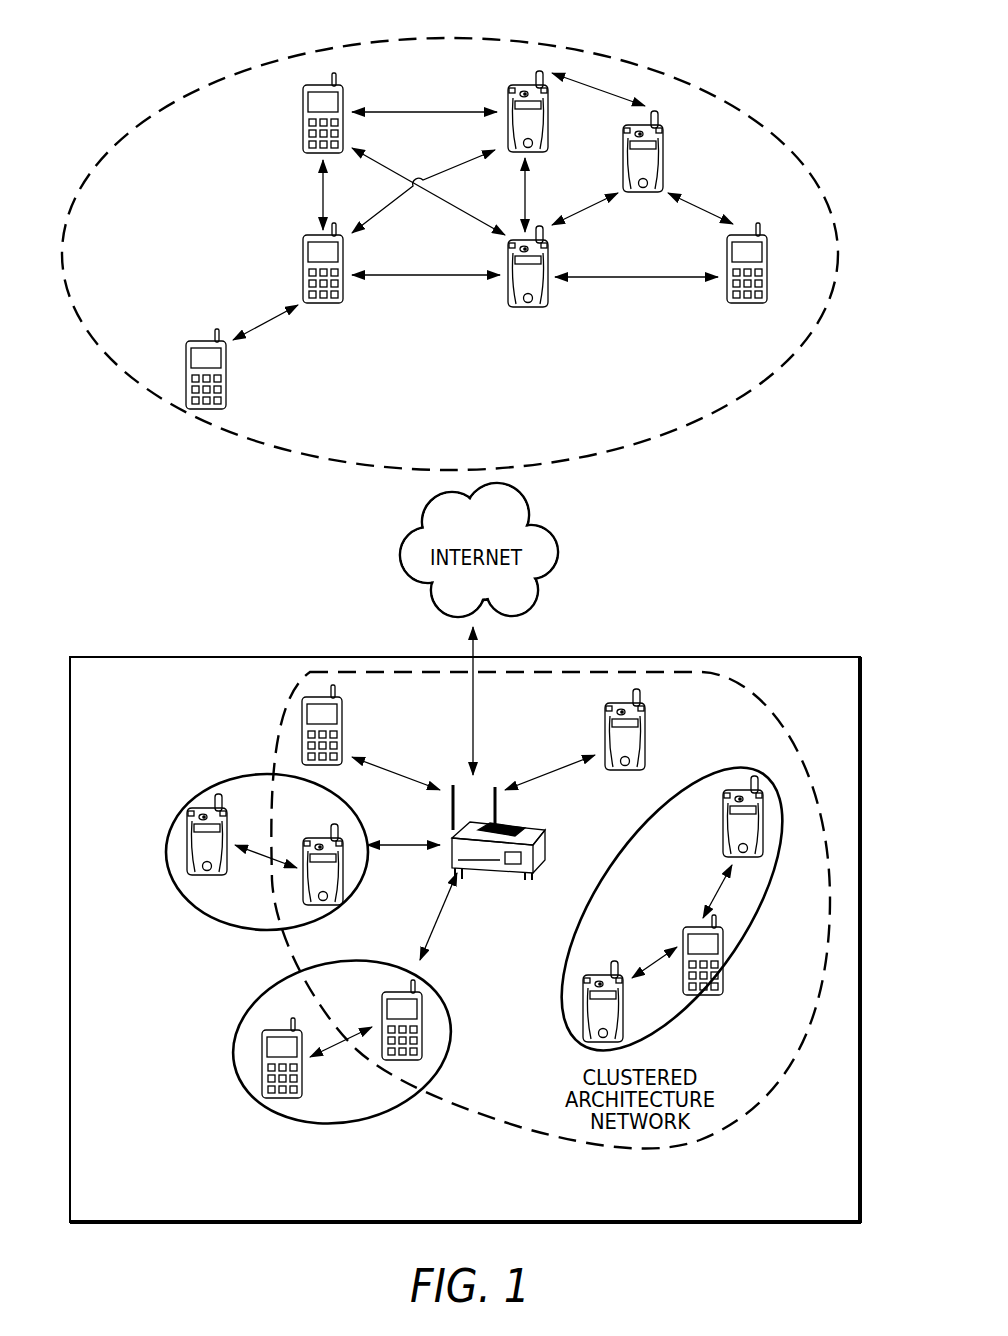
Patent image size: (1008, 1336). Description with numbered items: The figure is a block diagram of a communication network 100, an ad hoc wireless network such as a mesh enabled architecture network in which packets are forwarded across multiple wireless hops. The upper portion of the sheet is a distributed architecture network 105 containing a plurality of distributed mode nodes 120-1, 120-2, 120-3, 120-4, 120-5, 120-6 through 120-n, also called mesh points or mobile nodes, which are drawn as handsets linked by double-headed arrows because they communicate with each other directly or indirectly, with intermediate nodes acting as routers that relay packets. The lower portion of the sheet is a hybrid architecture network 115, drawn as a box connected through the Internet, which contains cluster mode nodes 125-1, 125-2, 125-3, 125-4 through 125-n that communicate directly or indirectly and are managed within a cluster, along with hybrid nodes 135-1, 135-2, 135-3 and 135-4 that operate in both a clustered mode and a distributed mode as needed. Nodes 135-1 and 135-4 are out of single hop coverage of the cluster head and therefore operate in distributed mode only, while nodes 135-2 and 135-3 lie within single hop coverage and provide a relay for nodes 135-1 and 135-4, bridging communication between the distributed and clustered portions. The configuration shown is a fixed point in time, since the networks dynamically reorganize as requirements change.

The communication network 100 is at (822, 19).
The distributed architecture network 105 is at (712, 97).
The hybrid architecture network 115 is at (857, 656).
The distributed mode node 120-1 is at (509, 84).
The distributed mode node 120-2 is at (303, 118).
The distributed mode node 120-3 is at (303, 267).
The distributed mode node 120-4 is at (193, 340).
The distributed mode node 120-5 is at (527, 307).
The distributed mode node 120-6 is at (746, 303).
The distributed mode node 120-n is at (664, 159).
The cluster mode node 125-1 is at (644, 733).
The cluster mode node 125-2 is at (343, 725).
The cluster mode node 125-3 is at (723, 838).
The cluster mode node 125-4 is at (690, 927).
The cluster mode node 125-n is at (606, 975).
The node 135-1 is at (191, 812).
The node 135-2 is at (339, 834).
The node 135-3 is at (401, 993).
The node 135-4 is at (302, 1089).